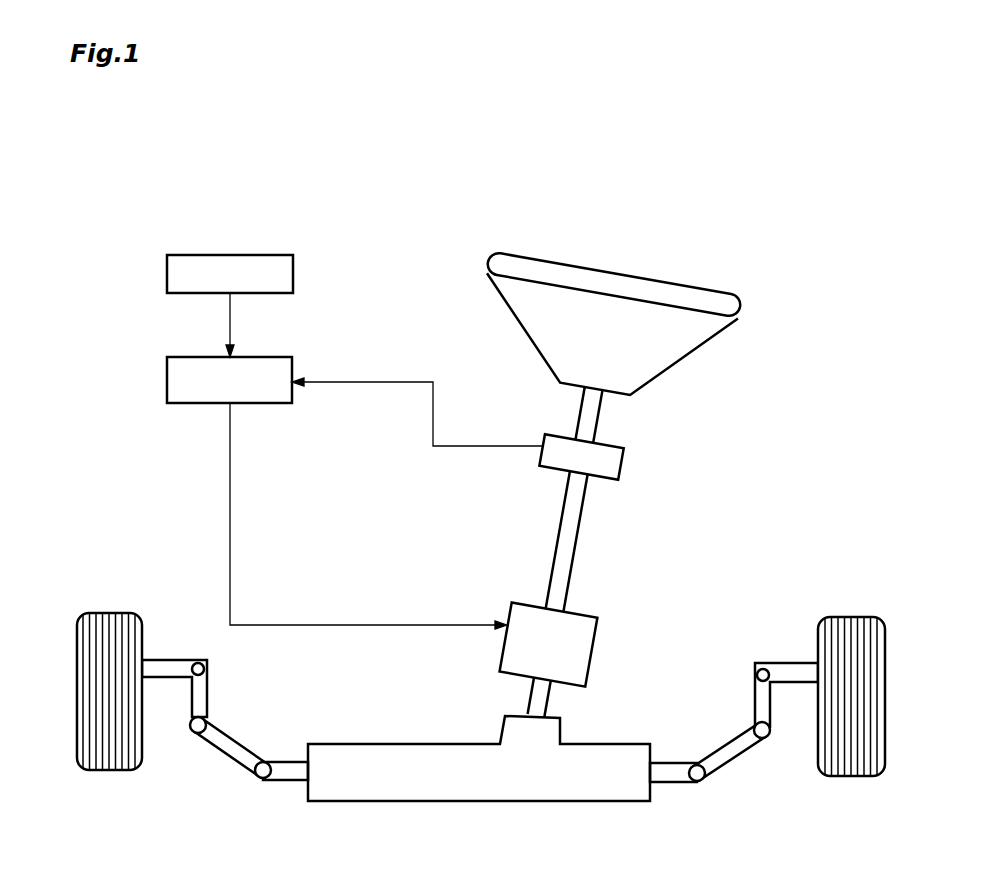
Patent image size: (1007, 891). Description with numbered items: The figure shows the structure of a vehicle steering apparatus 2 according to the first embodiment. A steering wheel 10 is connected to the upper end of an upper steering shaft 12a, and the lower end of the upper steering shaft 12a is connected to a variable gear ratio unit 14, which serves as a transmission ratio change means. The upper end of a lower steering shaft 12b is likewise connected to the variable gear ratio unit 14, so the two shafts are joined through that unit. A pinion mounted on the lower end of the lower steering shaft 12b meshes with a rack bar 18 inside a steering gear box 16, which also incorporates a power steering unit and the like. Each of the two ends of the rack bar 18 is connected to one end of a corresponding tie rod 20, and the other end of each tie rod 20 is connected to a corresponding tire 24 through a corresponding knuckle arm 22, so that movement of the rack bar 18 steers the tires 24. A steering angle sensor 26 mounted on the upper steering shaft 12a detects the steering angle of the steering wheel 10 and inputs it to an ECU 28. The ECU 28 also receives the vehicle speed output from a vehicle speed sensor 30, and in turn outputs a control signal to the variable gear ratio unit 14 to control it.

The vehicle steering apparatus 2 is at (407, 250).
The steering wheel 10 is at (684, 283).
The upper steering shaft 12a is at (570, 530).
The lower steering shaft 12b is at (550, 703).
The variable gear ratio unit 14 is at (583, 628).
The steering gear box 16 is at (543, 797).
The rack bar 18 is at (290, 783).
The tie rod 20 is at (227, 748).
The knuckle arm 22 is at (175, 663).
The tire 24 is at (113, 773).
The steering angle sensor 26 is at (612, 458).
The ECU 28 is at (168, 377).
The vehicle speed sensor 30 is at (167, 272).